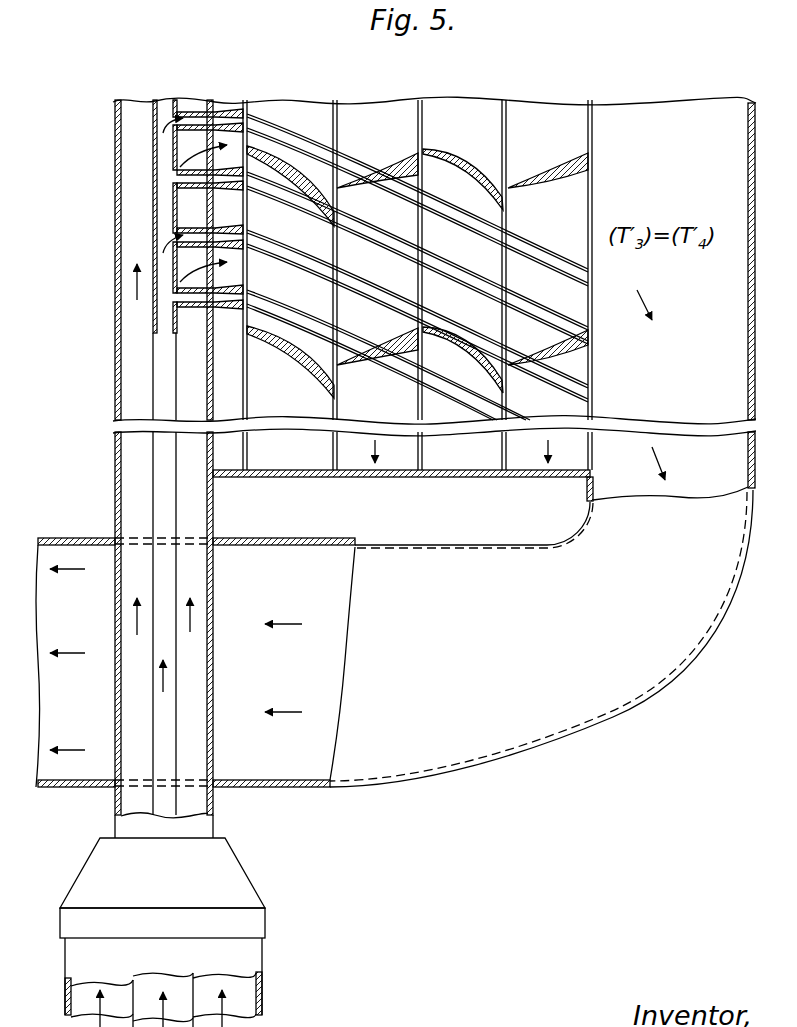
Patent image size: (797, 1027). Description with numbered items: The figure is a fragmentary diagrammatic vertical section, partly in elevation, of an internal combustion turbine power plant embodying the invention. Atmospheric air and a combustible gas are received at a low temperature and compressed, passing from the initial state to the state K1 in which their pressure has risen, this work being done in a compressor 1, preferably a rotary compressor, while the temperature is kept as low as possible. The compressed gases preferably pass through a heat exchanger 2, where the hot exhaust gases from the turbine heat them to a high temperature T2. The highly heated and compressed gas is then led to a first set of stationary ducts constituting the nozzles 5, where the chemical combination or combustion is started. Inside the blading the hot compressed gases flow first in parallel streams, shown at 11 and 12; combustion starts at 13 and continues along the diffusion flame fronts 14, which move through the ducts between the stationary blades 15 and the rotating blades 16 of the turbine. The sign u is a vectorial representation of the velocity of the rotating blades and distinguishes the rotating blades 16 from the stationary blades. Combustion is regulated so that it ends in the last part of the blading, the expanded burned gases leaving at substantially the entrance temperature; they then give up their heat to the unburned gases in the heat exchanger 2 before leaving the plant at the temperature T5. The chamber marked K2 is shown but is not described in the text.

The compressor 1 is at (233, 887).
The heat exchanger 2 is at (76, 797).
The nozzles 5 is at (188, 111).
The parallel stream 11 is at (273, 127).
The parallel stream 12 is at (277, 143).
The combustion starting point 13 is at (243, 115).
The diffusion flame fronts 14 is at (305, 178).
The stationary blades 15 is at (335, 152).
The rotating blades 16 is at (402, 160).
The compressed state K1 is at (232, 830).
The duct K2 is at (195, 514).
The temperature after heat exchange T2 is at (130, 490).
The exhaust temperature T5 is at (394, 638).
The velocity of the rotating blades u is at (471, 451).